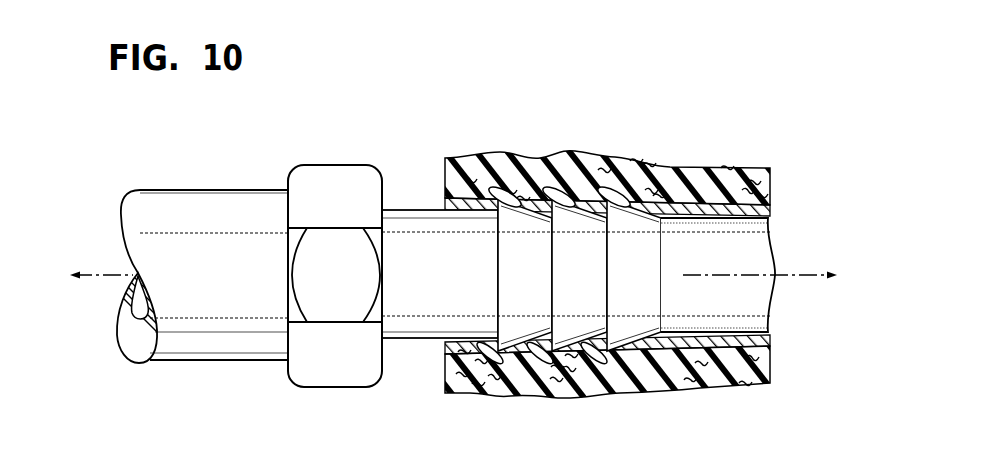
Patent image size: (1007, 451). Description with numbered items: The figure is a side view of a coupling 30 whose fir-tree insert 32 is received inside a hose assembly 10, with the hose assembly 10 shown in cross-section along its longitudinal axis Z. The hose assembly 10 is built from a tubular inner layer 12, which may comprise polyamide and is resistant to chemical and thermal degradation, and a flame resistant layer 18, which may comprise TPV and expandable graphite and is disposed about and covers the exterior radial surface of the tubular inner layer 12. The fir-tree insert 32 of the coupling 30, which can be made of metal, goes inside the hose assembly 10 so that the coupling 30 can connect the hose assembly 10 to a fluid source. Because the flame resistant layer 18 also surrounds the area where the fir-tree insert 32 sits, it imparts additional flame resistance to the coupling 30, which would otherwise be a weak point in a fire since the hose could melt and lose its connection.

The hose assembly 10 is at (620, 98).
The tubular inner layer 12 is at (703, 340).
The flame resistant layer 18 is at (707, 180).
The coupling 30 is at (268, 173).
The fir-tree insert 32 is at (518, 278).